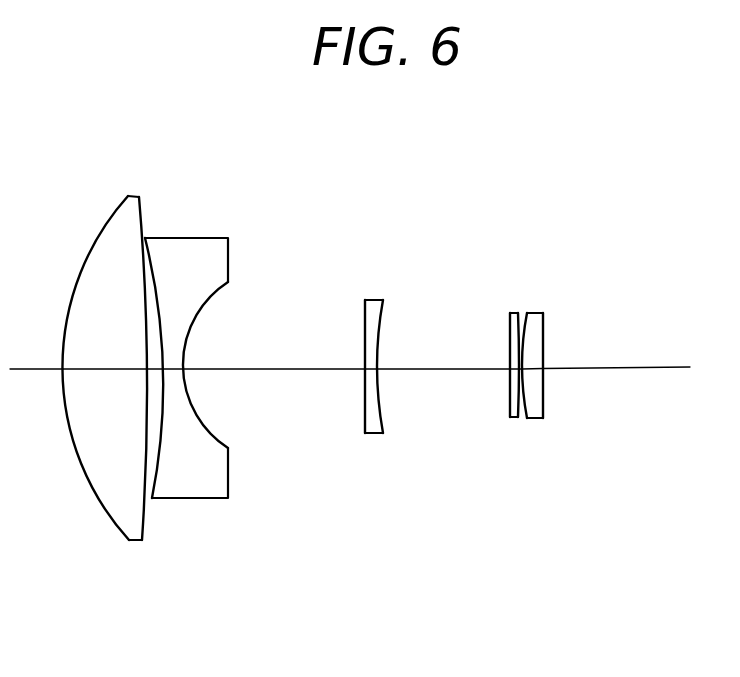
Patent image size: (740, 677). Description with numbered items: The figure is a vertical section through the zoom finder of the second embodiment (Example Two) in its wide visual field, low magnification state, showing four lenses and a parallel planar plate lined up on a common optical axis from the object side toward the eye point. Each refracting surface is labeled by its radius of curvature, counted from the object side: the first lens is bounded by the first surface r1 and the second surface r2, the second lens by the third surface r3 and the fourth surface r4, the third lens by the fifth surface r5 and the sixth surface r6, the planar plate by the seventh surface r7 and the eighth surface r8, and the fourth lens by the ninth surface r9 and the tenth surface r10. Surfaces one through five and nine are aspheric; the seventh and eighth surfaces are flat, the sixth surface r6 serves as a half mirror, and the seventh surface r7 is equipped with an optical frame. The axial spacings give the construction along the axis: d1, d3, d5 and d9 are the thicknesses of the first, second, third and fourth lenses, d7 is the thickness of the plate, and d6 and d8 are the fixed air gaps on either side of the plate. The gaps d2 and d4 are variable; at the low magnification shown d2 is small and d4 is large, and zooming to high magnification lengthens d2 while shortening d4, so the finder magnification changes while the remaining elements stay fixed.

The first surface radius of curvature r1 is at (108, 222).
The second surface radius of curvature r2 is at (142, 210).
The third surface radius of curvature r3 is at (147, 238).
The fourth surface radius of curvature r4 is at (202, 310).
The fifth surface radius of curvature r5 is at (363, 310).
The sixth surface radius of curvature r6 is at (383, 312).
The seventh surface radius of curvature r7 is at (509, 318).
The eighth surface radius of curvature r8 is at (521, 363).
The ninth surface radius of curvature r9 is at (525, 330).
The tenth surface radius of curvature r10 is at (545, 318).
The first axial surface spacing d1 is at (112, 369).
The second axial surface spacing d2 is at (157, 369).
The third axial surface spacing d3 is at (173, 369).
The fourth axial surface spacing d4 is at (272, 369).
The fifth axial surface spacing d5 is at (363, 433).
The sixth axial surface spacing d6 is at (445, 369).
The seventh axial surface spacing d7 is at (522, 370).
The eighth axial surface spacing d8 is at (520, 373).
The ninth axial surface spacing d9 is at (543, 383).